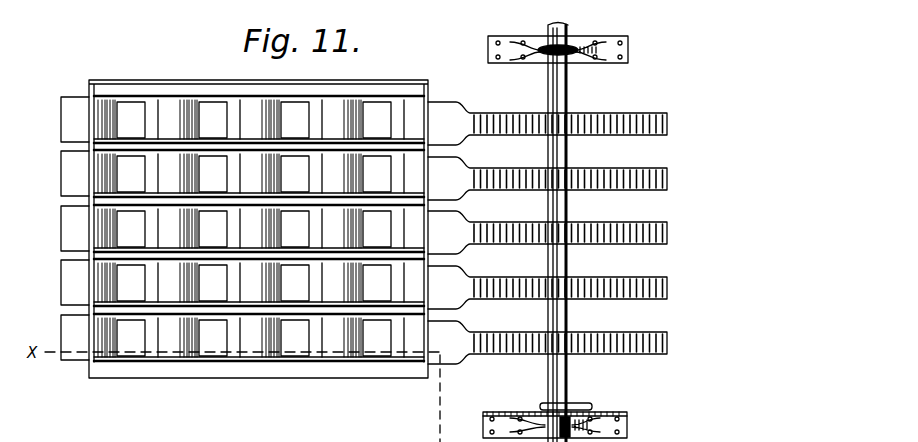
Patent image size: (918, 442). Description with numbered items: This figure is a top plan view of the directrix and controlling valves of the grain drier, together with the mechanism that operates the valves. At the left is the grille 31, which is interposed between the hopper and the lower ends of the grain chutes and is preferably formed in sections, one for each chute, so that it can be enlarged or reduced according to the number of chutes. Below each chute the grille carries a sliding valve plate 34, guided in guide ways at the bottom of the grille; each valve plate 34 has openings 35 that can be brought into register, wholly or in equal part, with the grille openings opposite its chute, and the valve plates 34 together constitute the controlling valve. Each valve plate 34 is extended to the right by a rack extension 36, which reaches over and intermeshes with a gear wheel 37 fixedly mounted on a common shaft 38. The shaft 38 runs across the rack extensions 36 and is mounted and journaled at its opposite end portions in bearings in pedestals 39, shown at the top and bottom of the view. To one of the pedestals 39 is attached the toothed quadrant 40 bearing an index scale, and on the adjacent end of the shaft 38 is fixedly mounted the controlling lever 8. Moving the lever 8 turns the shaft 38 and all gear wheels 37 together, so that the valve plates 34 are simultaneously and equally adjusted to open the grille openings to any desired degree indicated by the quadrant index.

The controlling lever 8 is at (573, 407).
The grille 31 is at (192, 88).
The valve plate 34 is at (72, 118).
The openings 35 is at (254, 229).
The rack extension 36 is at (511, 115).
The gear wheel 37 is at (597, 135).
The common shaft 38 is at (571, 100).
The pedestals 39 is at (580, 47).
The toothed quadrant 40 is at (602, 413).